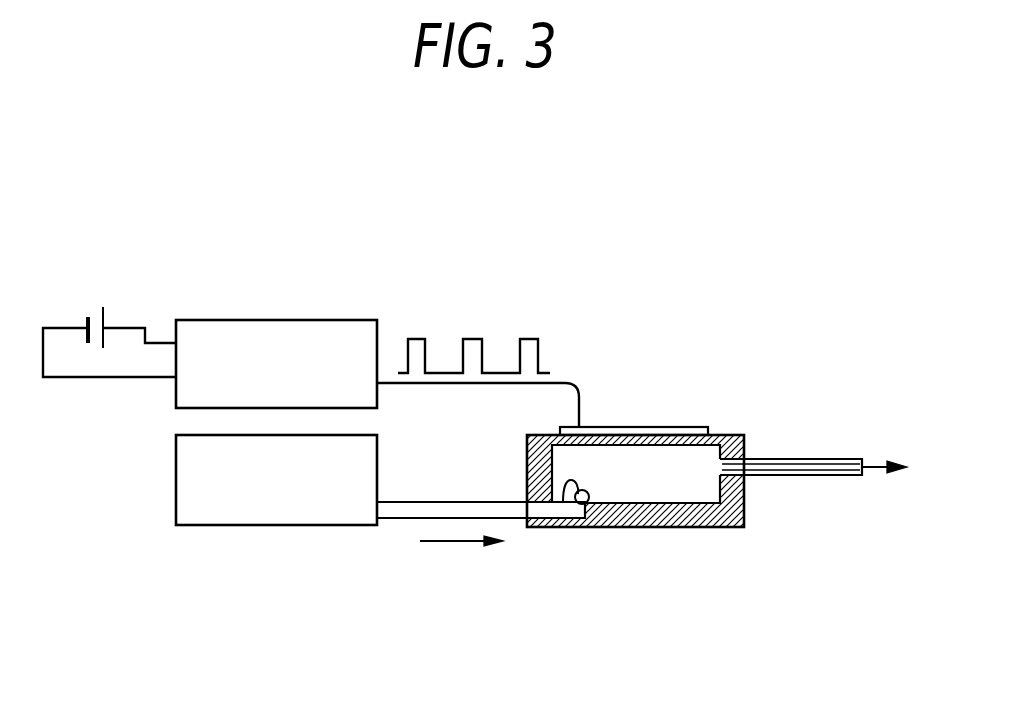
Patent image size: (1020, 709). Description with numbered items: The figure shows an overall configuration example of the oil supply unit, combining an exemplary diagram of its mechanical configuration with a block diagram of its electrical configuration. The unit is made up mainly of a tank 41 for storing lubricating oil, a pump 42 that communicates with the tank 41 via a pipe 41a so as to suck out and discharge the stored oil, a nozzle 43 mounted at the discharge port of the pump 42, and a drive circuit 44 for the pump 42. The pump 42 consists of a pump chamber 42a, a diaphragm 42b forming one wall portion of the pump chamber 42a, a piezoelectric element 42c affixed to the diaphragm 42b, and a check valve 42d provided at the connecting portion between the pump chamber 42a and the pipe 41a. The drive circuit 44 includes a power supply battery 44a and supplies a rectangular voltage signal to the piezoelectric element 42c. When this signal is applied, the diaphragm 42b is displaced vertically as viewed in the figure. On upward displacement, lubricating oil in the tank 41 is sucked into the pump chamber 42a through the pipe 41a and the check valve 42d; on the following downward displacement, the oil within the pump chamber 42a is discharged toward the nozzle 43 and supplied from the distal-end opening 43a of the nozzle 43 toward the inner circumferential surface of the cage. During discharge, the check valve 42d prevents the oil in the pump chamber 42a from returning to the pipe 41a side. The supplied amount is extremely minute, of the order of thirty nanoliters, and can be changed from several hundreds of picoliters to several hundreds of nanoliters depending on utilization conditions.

The tank 41 is at (247, 527).
The pipe 41a is at (407, 508).
The pump 42 is at (664, 458).
The pump chamber 42a is at (658, 468).
The diaphragm 42b is at (737, 435).
The piezoelectric element 42c is at (633, 427).
The check valve 42d is at (567, 485).
The nozzle 43 is at (791, 468).
The distal-end opening 43a is at (863, 467).
The drive circuit 44 is at (325, 320).
The power supply battery 44a is at (88, 317).